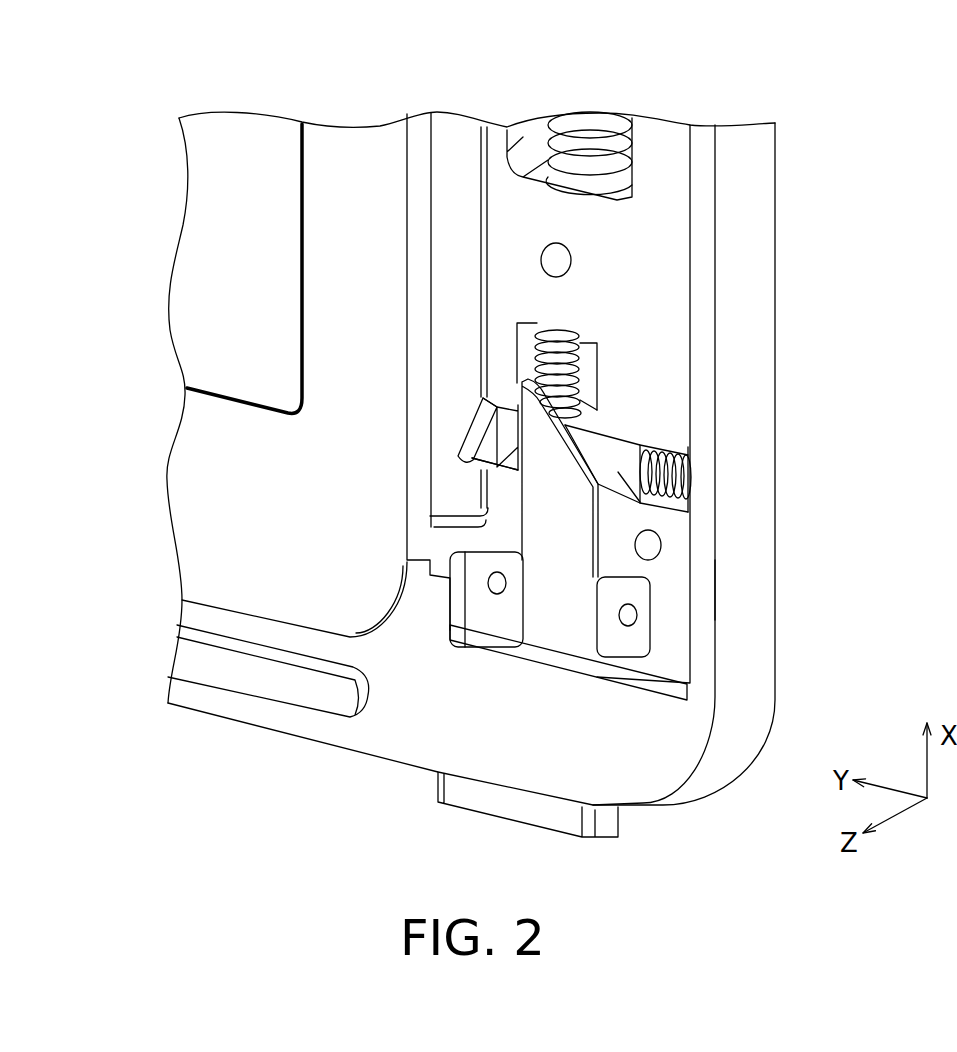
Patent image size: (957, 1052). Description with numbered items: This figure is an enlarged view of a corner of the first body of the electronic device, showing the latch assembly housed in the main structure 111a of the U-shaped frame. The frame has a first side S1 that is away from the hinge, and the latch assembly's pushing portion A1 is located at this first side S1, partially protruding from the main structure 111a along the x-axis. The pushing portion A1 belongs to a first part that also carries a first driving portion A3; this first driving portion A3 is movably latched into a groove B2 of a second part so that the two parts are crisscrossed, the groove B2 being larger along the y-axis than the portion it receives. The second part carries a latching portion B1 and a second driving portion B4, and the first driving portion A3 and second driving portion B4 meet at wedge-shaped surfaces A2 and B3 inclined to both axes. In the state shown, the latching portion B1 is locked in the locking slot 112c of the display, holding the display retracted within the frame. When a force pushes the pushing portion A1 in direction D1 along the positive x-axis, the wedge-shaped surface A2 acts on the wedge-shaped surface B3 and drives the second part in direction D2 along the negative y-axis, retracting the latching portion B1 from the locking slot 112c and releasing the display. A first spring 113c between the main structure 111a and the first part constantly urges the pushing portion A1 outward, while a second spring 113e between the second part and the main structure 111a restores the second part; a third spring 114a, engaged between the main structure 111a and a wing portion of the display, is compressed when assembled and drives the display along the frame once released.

The main structure 111a is at (755, 592).
The locking slot 112c is at (465, 422).
The first spring 113c is at (567, 337).
The second spring 113e is at (690, 470).
The third spring 114a is at (592, 185).
The pushing portion A1 is at (473, 810).
The wedge-shaped surface A2 is at (588, 405).
The first driving portion A3 is at (565, 552).
The latching portion B1 is at (480, 440).
The groove B2 is at (512, 432).
The wedge-shaped surface B3 is at (582, 453).
The second driving portion B4 is at (640, 502).
The direction D1 is at (520, 835).
The direction D2 is at (795, 503).
The first side S1 is at (327, 770).